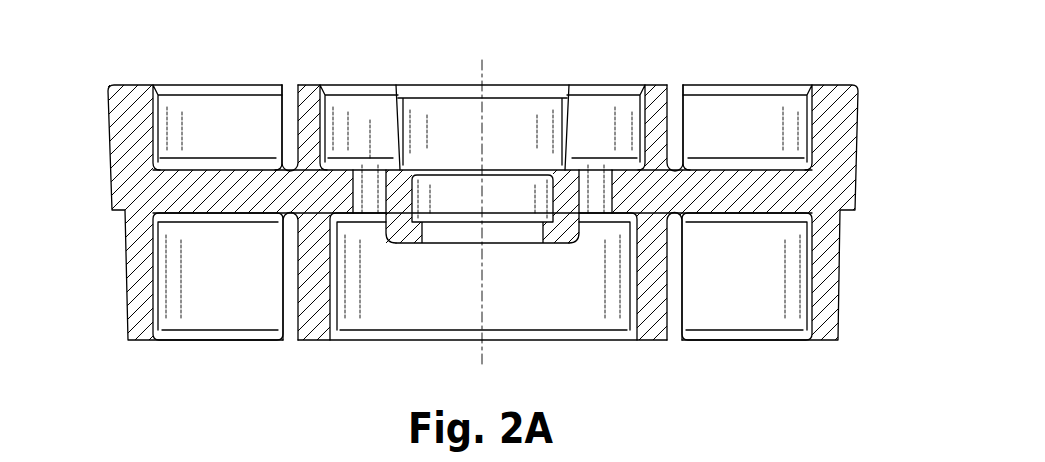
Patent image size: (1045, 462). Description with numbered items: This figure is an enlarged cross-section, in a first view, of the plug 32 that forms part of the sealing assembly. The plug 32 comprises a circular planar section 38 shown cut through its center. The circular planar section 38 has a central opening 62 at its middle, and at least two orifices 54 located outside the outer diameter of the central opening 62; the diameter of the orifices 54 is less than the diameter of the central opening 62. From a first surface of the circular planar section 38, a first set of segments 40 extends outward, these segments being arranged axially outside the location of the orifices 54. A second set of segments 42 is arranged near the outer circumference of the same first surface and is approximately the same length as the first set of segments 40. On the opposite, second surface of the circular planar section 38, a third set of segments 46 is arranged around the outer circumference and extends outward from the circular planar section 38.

The plug 32 is at (869, 79).
The third set of segments 46 is at (110, 136).
The circular planar section 38 is at (850, 182).
The second set of segments 42 is at (140, 296).
The first set of segments 40 is at (312, 340).
The orifices 54 is at (366, 232).
The central opening 62 is at (559, 241).